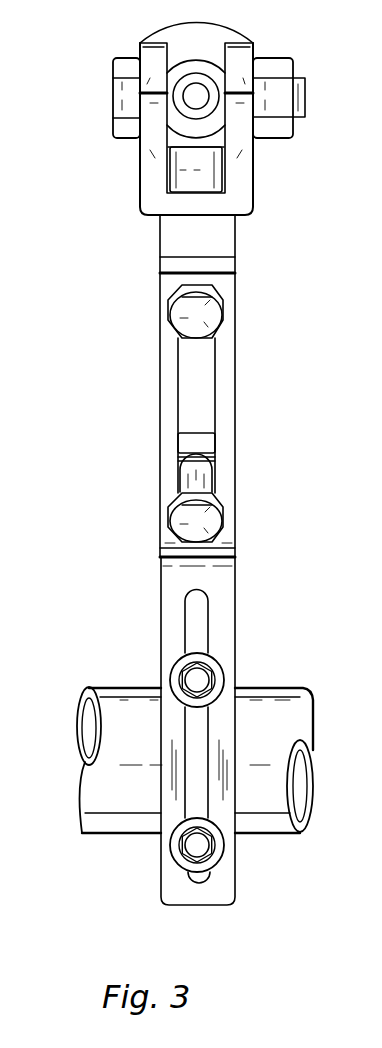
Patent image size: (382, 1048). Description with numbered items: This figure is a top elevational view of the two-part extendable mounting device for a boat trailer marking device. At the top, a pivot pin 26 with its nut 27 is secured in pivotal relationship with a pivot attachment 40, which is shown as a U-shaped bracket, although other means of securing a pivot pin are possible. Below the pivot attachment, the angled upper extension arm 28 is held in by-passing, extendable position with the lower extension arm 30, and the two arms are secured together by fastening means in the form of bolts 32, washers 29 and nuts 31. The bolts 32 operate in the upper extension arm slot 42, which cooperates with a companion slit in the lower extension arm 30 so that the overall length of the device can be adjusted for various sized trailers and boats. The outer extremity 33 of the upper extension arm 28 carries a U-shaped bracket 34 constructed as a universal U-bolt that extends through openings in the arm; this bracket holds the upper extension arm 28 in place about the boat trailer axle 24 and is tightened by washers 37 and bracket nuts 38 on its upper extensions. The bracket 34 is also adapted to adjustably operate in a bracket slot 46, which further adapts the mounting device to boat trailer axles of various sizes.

The boat trailer axle 24 is at (270, 752).
The pivot pin 26 is at (112, 100).
The nut 27 is at (293, 62).
The upper extension arm 28 is at (225, 370).
The washers 29 is at (182, 465).
The lower extension arm 30 is at (210, 240).
The nuts 31 is at (203, 445).
The bolts 32 is at (170, 297).
The outer extremity 33 is at (225, 705).
The U-shaped bracket 34 is at (222, 847).
The washers 37 is at (183, 872).
The bracket nuts 38 is at (178, 848).
The pivot attachment 40 is at (257, 201).
The upper extension arm slot 42 is at (182, 403).
The bracket slot 46 is at (197, 755).